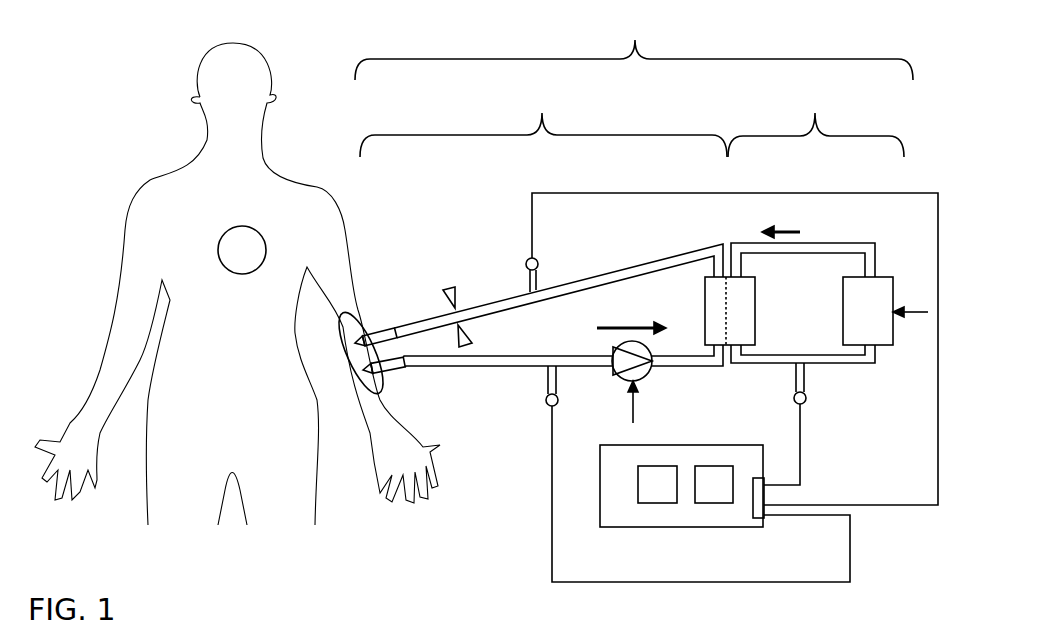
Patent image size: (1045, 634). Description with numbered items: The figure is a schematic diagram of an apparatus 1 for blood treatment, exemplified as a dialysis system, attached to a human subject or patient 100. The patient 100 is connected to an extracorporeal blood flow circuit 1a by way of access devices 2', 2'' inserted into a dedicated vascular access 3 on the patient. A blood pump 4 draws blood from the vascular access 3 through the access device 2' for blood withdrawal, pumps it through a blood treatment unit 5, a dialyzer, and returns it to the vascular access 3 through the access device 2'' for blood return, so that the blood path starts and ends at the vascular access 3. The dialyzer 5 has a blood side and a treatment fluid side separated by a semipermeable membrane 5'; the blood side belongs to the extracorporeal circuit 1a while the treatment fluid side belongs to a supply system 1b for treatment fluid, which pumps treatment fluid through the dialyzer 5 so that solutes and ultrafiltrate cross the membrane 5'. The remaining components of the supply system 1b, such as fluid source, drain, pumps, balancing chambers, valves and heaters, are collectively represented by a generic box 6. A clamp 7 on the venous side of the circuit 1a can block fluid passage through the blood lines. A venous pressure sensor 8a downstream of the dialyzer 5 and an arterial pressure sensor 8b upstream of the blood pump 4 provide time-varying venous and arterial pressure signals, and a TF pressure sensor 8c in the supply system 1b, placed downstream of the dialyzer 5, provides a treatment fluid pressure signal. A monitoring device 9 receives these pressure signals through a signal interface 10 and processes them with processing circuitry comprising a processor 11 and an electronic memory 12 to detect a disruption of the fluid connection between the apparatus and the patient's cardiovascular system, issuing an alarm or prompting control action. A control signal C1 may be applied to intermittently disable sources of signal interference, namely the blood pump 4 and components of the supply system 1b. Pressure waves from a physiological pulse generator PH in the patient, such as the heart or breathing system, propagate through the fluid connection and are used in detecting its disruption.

The apparatus for blood treatment 1 is at (634, 44).
The extracorporeal blood flow circuit 1a is at (543, 118).
The supply system for treatment fluid 1b is at (816, 120).
The patient 100 is at (154, 176).
The physiological pulse generator PH is at (250, 228).
The access device for blood withdrawal 2' is at (539, 282).
The access device for blood return 2'' is at (543, 303).
The vascular access 3 is at (357, 357).
The blood pump 4 is at (612, 375).
The blood treatment unit 5 is at (762, 311).
The semipermeable membrane 5' is at (701, 274).
The generic box 6 is at (883, 345).
The clamp 7 is at (456, 295).
The venous pressure sensor 8a is at (526, 262).
The arterial pressure sensor 8b is at (546, 401).
The TF pressure sensor 8c is at (806, 402).
The monitoring device 9 is at (685, 445).
The signal interface 10 is at (758, 513).
The processor 11 is at (655, 503).
The electronic memory 12 is at (717, 503).
The control signal C1 is at (779, 354).